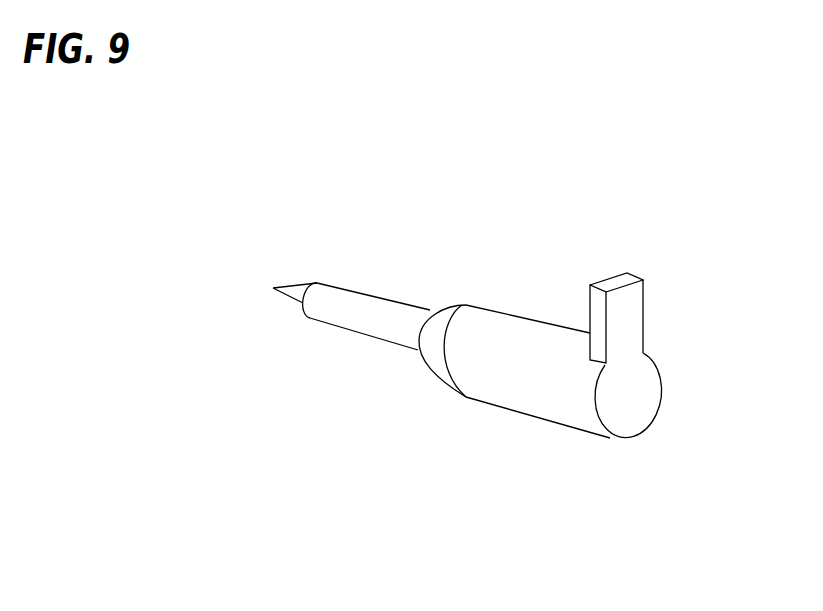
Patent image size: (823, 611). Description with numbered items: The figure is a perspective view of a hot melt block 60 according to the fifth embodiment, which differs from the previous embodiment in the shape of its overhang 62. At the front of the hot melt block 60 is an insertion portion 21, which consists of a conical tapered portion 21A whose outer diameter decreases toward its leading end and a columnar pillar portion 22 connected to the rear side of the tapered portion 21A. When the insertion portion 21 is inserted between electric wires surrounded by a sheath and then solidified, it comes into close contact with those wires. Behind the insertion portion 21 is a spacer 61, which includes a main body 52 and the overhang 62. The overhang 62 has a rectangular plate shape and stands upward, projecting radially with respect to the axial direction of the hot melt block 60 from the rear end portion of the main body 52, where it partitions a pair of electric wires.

The hot melt block 60 is at (597, 248).
The spacer 61 is at (572, 503).
The main body 52 is at (502, 363).
The overhang 62 is at (592, 290).
The insertion portion 21 is at (373, 418).
The tapered portion 21A is at (294, 295).
The pillar portion 22 is at (367, 312).